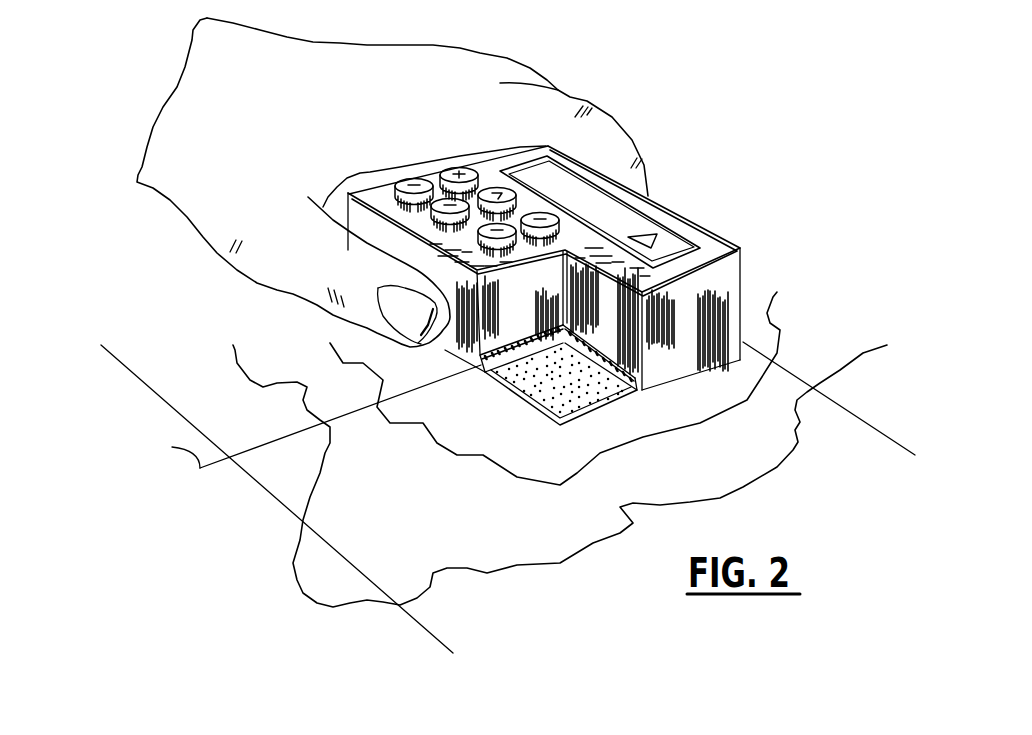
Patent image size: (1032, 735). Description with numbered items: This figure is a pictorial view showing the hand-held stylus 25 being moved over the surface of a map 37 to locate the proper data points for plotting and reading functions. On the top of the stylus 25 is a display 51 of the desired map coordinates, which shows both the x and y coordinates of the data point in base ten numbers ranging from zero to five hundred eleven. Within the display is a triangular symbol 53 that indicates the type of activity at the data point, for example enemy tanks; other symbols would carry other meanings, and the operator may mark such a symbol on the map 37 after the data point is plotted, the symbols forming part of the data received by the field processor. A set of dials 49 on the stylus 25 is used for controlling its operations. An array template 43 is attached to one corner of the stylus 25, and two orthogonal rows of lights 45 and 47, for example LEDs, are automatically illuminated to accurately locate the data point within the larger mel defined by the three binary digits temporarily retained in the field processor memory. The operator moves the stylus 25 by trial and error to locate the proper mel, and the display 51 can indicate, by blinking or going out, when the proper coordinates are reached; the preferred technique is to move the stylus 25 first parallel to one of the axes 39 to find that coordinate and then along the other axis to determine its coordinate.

The stylus 25 is at (717, 233).
The map 37 is at (389, 525).
The axes 39 is at (198, 433).
The array template 43 is at (577, 419).
The row of lights 45 is at (640, 381).
The row of lights 47 is at (479, 366).
The dials 49 is at (456, 171).
The display of map coordinates 51 is at (570, 173).
The triangular symbol 53 is at (640, 239).